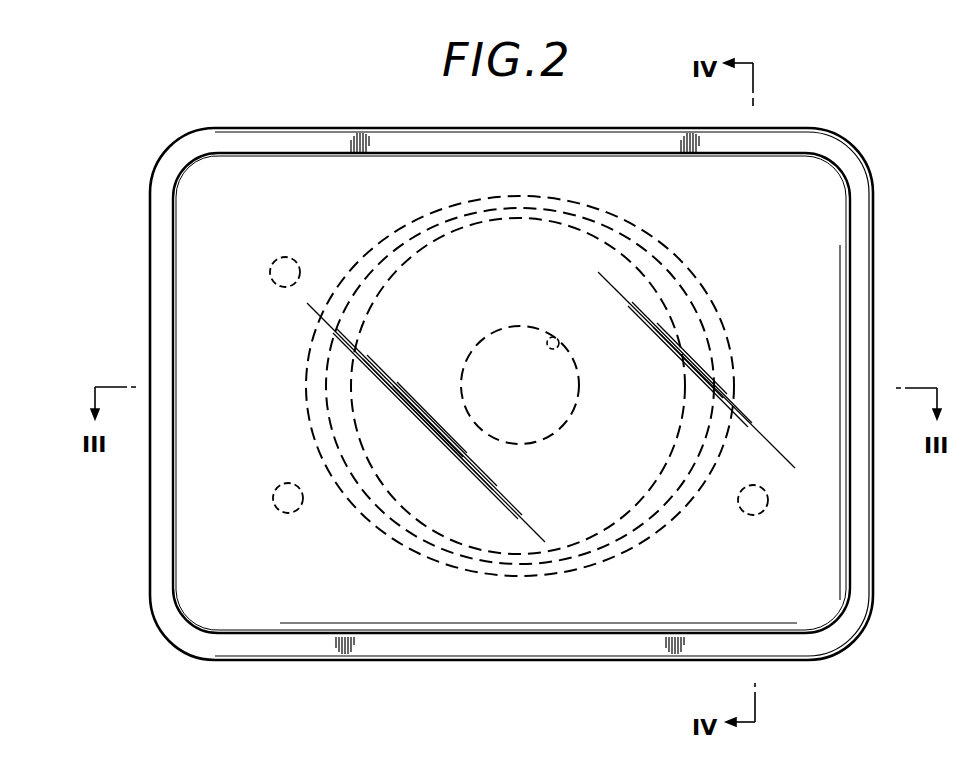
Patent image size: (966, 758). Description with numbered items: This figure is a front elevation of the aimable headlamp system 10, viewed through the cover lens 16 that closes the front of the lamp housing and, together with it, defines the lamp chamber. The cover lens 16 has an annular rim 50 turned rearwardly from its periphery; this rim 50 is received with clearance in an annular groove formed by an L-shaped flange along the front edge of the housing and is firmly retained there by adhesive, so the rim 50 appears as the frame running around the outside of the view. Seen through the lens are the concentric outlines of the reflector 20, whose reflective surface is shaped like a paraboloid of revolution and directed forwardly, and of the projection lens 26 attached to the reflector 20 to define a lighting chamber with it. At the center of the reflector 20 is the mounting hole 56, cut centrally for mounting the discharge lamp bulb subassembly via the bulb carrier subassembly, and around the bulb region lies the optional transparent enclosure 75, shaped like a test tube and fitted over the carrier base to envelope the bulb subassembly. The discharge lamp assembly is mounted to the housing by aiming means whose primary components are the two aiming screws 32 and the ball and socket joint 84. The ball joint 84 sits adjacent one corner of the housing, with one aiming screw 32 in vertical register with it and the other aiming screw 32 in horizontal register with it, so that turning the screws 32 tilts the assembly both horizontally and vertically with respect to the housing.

The headlamp system 10 is at (126, 206).
The cover lens 16 is at (818, 332).
The reflector 20 is at (677, 256).
The projection lens 26 is at (670, 308).
The aiming screws 32 is at (286, 257).
The annular rim 50 is at (863, 243).
The mounting hole 56 is at (556, 338).
The transparent enclosure 75 is at (513, 326).
The ball and socket joint 84 is at (282, 512).